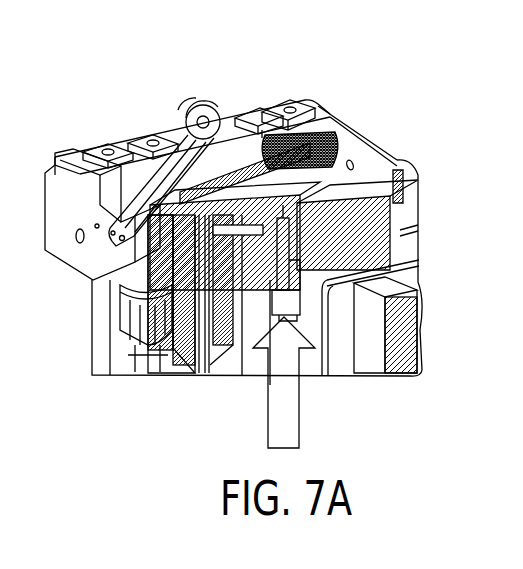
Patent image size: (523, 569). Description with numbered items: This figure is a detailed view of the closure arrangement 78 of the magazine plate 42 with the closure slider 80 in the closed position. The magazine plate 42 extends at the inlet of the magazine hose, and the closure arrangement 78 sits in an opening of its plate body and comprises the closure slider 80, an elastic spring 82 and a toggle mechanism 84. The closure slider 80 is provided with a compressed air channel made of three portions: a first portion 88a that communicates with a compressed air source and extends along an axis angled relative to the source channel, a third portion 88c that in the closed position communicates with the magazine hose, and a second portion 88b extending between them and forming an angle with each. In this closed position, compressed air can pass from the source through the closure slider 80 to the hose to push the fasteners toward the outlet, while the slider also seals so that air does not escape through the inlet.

The closure arrangement 78 is at (346, 73).
The closure slider 80 is at (268, 200).
The elastic spring 82 is at (343, 135).
The toggle mechanism 84 is at (252, 108).
The magazine plate 42 is at (395, 245).
The first portion of compressed air channel 88a is at (283, 213).
The second portion of compressed air channel 88b is at (190, 150).
The third portion of compressed air channel 88c is at (137, 262).